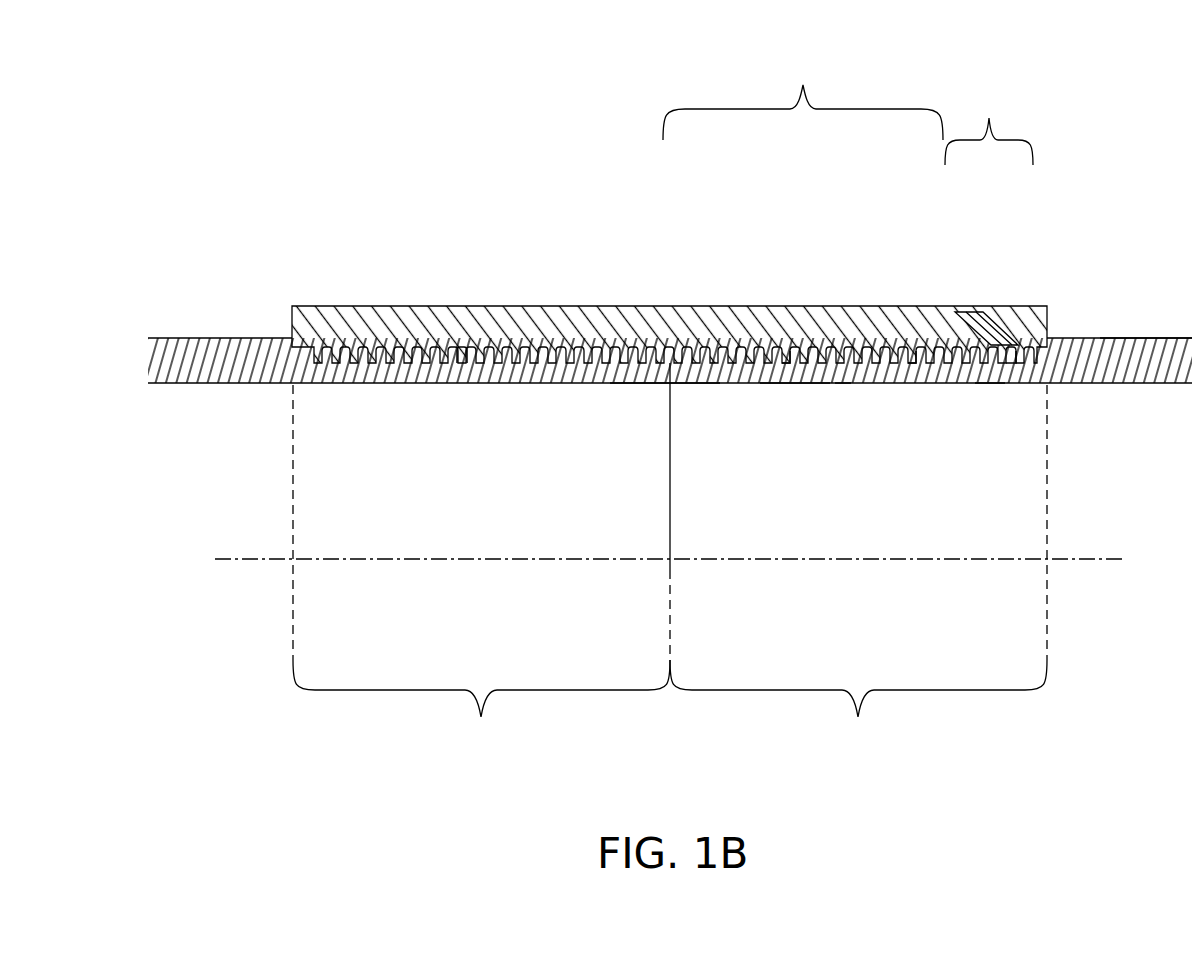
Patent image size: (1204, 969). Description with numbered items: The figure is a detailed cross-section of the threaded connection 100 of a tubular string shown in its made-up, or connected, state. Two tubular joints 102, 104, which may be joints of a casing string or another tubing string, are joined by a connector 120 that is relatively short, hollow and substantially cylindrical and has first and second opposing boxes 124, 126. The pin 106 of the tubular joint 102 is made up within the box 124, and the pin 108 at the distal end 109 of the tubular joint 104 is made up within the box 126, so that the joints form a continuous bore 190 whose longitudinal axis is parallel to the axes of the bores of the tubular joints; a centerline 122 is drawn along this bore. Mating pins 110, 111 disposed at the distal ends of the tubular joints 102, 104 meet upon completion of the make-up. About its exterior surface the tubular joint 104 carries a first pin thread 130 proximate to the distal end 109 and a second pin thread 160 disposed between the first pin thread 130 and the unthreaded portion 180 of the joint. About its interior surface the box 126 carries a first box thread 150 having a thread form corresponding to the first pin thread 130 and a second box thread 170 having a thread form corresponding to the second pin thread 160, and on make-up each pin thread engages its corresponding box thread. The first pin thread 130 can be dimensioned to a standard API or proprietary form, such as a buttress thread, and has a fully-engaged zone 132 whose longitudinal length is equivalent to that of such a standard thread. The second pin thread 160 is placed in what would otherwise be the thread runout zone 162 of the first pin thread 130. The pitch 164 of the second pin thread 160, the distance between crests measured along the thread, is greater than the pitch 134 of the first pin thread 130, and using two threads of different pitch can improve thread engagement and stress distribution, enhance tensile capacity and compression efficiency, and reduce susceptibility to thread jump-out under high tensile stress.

The threaded connection 100 is at (448, 97).
The tubular joint 102 is at (670, 344).
The tubular joint 104 is at (1067, 374).
The pin 106 is at (465, 364).
The pin 108 is at (916, 345).
The distal end 109 is at (670, 519).
The mating pin 110 is at (661, 378).
The mating pin 111 is at (677, 368).
The connector 120 is at (700, 346).
The centerline 122 is at (333, 558).
The box 124 is at (481, 710).
The box 126 is at (858, 710).
The first pin thread 130 is at (793, 382).
The fully-engaged zone 132 is at (803, 97).
The pitch 134 is at (843, 378).
The first box thread 150 is at (792, 357).
The second pin thread 160 is at (990, 378).
The thread runout zone 162 is at (989, 125).
The pitch 164 is at (975, 312).
The second box thread 170 is at (1015, 345).
The unthreaded portion 180 is at (1110, 340).
The continuous bore 190 is at (507, 500).